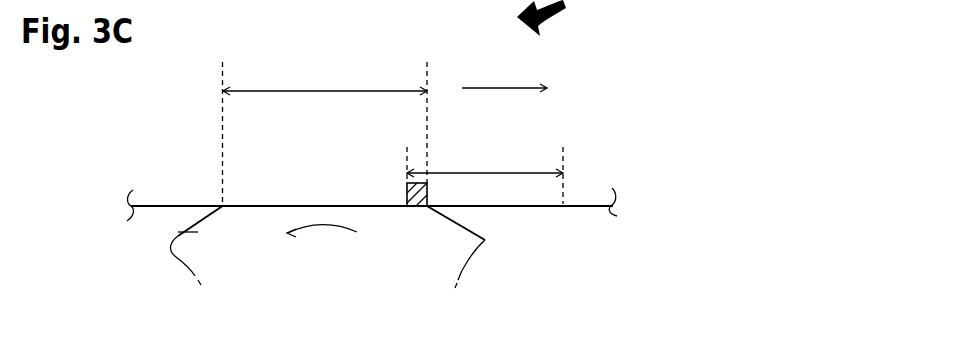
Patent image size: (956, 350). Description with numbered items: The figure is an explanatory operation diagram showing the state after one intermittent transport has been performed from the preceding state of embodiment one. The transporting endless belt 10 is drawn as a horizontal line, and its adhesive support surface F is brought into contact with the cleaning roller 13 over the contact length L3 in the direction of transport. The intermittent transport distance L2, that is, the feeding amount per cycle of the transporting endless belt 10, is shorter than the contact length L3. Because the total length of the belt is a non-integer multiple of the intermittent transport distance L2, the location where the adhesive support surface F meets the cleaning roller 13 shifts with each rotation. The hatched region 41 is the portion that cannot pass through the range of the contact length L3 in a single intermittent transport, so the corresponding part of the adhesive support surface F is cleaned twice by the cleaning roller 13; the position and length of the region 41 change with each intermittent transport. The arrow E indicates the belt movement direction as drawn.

The transporting endless belt 10 is at (163, 206).
The cleaning roller 13 is at (179, 234).
The region 41 is at (415, 206).
The contact length L3 is at (283, 92).
The intermittent transport distance L2 is at (475, 173).
The direction E is at (504, 76).
The adhesive support surface F is at (537, 206).